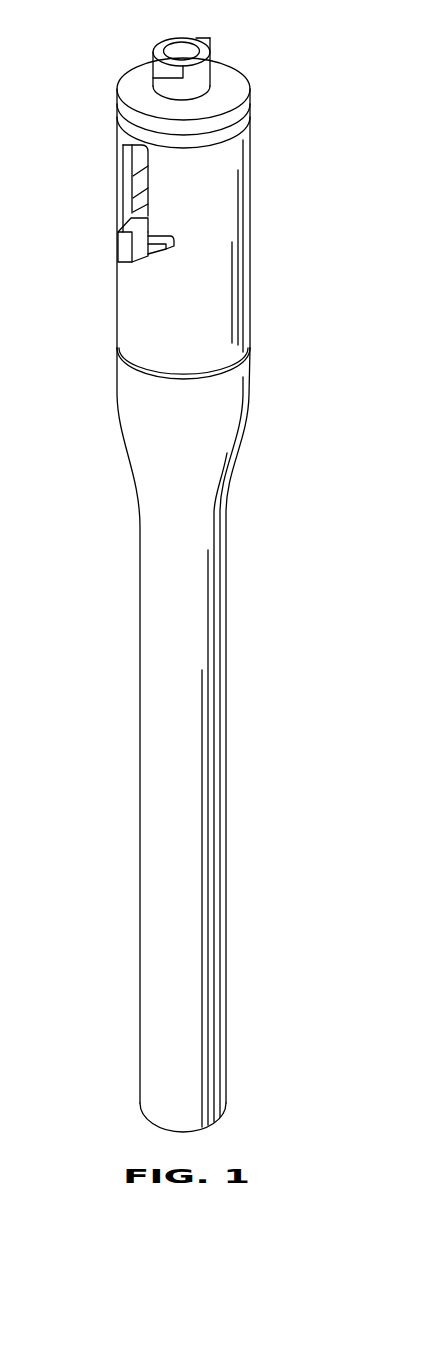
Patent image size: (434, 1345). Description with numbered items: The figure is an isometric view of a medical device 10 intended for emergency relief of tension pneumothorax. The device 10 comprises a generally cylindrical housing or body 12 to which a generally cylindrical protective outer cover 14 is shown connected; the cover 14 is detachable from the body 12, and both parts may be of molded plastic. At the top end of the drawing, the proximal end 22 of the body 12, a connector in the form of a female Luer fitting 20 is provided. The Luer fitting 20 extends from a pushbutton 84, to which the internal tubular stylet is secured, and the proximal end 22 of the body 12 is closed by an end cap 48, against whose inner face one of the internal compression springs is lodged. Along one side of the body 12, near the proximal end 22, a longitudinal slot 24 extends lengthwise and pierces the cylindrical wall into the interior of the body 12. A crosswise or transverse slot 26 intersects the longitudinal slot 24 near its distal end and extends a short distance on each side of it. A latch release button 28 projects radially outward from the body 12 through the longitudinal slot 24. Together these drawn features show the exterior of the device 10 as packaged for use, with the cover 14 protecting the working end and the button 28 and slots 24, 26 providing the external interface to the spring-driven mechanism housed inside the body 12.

The medical device 10 is at (76, 98).
The body 12 is at (251, 214).
The protective outer cover 14 is at (140, 805).
The female Luer fitting 20 is at (167, 36).
The proximal end 22 is at (251, 124).
The longitudinal slot 24 is at (133, 168).
The transverse slot 26 is at (118, 217).
The latch release button 28 is at (121, 262).
The end cap 48 is at (224, 146).
The pushbutton 84 is at (231, 61).